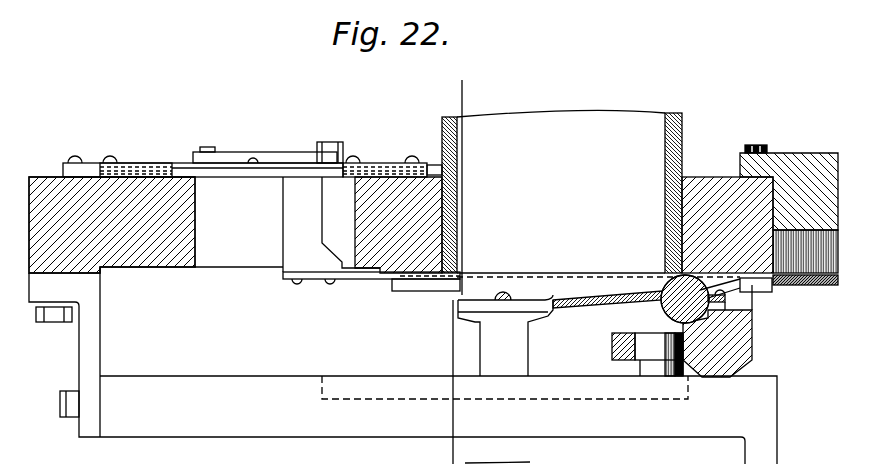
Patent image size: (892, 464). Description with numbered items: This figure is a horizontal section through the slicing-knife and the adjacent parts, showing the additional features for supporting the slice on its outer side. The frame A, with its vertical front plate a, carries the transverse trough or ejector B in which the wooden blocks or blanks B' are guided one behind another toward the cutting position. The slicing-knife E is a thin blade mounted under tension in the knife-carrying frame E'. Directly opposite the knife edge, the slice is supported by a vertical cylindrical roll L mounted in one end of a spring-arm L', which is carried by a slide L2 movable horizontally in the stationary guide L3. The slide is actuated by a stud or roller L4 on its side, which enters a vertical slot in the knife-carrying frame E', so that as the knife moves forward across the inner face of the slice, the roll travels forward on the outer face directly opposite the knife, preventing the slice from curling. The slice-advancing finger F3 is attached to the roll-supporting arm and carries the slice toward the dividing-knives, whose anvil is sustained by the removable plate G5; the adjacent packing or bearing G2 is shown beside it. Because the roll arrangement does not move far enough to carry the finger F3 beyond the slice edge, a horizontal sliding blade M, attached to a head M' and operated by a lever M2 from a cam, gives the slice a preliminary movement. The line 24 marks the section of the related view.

The frame A is at (50, 167).
The front plate a is at (378, 225).
The trough or ejector B is at (548, 193).
The wooden blocks or blanks B' is at (598, 193).
The horizontal sliding blade M is at (261, 233).
The head M' is at (331, 224).
The lever M2 is at (320, 148).
The removable plate G5 is at (809, 168).
The gasket / packing G2 is at (805, 257).
The section line 24 24 is at (483, 272).
The vertical cylindrical roll L is at (667, 300).
The spring-arm L' is at (630, 316).
The slide L2 is at (505, 334).
The stationary guide L3 is at (403, 365).
The stud or roller L4 is at (647, 354).
The slicing-knife E is at (730, 300).
The knife-carrying frame E' is at (727, 343).
The slice-advancing finger F3 is at (763, 292).